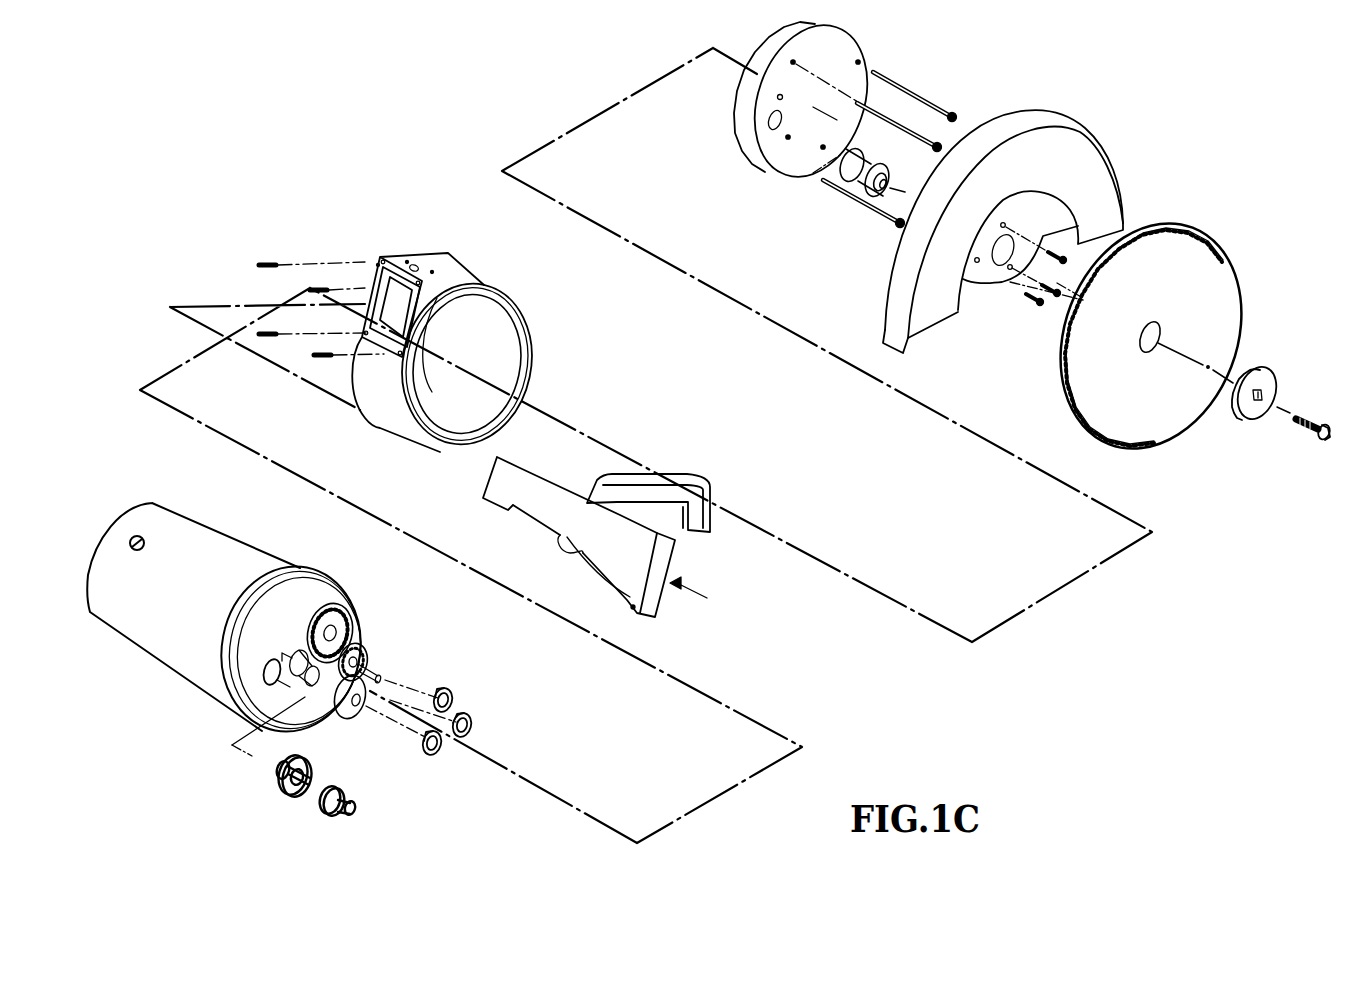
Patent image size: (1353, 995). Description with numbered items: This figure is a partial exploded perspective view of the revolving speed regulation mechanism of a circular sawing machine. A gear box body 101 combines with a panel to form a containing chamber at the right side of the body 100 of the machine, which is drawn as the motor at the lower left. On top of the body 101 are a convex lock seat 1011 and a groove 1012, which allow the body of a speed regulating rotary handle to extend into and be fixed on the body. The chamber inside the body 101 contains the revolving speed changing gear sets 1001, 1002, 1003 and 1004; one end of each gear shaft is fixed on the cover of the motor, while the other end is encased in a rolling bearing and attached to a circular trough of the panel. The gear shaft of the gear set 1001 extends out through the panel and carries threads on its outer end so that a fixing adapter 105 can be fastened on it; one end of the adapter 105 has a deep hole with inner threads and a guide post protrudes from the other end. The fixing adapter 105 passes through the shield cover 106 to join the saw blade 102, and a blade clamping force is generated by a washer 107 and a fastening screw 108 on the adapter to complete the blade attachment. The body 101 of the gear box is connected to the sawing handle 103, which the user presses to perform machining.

The body of the circular sawing machine 100 is at (263, 557).
The revolving speed changing gear set 1001 is at (287, 783).
The revolving speed changing gear set 1002 is at (340, 623).
The revolving speed changing gear set 1003 is at (367, 647).
The revolving speed changing gear set 1004 is at (343, 711).
The body 101 is at (483, 285).
The convex lock seat 1011 is at (383, 288).
The groove 1012 is at (422, 254).
The saw blade 102 is at (1090, 396).
The sawing handle 103 is at (600, 523).
The fixing adapter 105 is at (872, 147).
The shield cover 106 is at (1098, 160).
The washer 107 is at (1257, 412).
The fastening screw 108 is at (1323, 437).